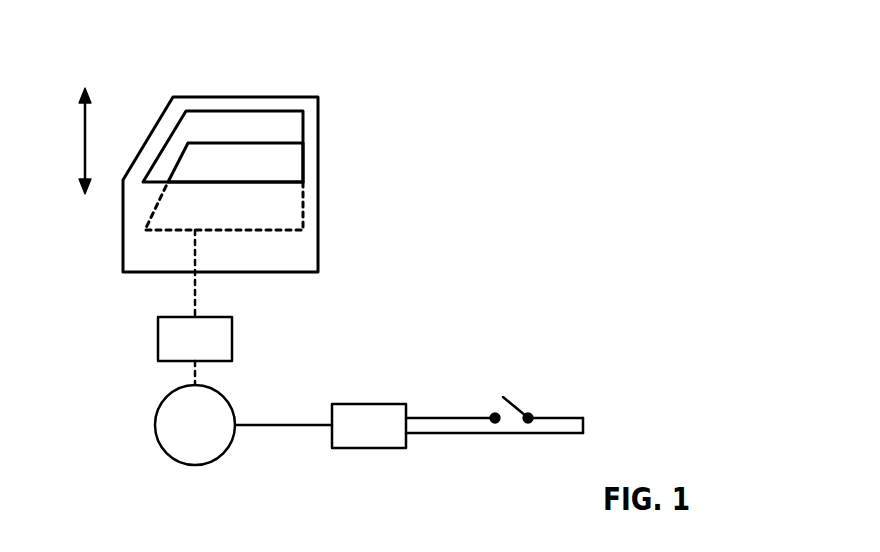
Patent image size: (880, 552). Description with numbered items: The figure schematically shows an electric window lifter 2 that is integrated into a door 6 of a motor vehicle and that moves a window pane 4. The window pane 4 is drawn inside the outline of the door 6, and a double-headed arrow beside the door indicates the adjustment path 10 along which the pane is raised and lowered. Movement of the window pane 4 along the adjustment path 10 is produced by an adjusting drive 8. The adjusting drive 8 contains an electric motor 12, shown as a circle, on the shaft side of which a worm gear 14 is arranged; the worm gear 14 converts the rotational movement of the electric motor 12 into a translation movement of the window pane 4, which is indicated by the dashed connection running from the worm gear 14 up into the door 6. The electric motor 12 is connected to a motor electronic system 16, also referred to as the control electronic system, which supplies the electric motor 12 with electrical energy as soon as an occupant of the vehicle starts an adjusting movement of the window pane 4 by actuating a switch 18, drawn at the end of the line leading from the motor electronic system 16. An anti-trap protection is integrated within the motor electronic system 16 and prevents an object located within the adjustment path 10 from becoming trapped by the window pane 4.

The electric window lifter 2 is at (441, 116).
The window pane 4 is at (292, 165).
The door 6 is at (292, 247).
The adjusting drive 8 is at (320, 357).
The adjustment path 10 is at (83, 136).
The electric motor 12 is at (175, 445).
The worm gear 14 is at (158, 336).
The motor electronic system 16 is at (357, 440).
The switch 18 is at (513, 408).